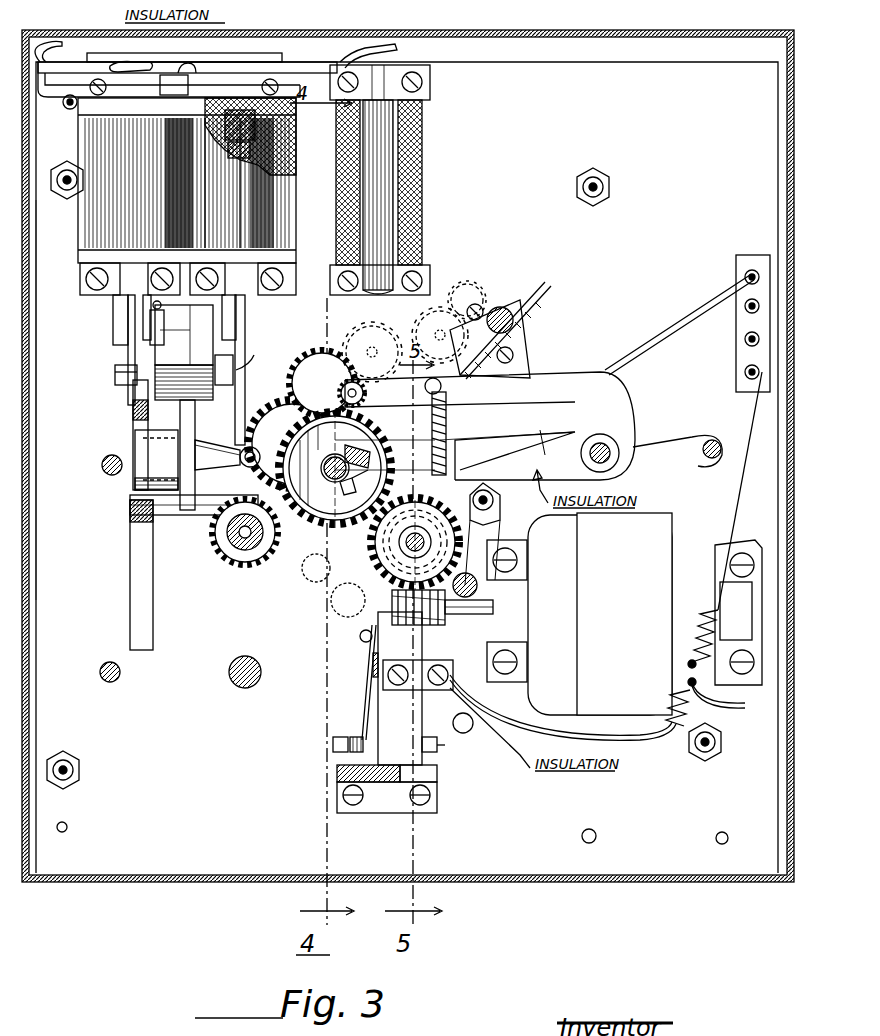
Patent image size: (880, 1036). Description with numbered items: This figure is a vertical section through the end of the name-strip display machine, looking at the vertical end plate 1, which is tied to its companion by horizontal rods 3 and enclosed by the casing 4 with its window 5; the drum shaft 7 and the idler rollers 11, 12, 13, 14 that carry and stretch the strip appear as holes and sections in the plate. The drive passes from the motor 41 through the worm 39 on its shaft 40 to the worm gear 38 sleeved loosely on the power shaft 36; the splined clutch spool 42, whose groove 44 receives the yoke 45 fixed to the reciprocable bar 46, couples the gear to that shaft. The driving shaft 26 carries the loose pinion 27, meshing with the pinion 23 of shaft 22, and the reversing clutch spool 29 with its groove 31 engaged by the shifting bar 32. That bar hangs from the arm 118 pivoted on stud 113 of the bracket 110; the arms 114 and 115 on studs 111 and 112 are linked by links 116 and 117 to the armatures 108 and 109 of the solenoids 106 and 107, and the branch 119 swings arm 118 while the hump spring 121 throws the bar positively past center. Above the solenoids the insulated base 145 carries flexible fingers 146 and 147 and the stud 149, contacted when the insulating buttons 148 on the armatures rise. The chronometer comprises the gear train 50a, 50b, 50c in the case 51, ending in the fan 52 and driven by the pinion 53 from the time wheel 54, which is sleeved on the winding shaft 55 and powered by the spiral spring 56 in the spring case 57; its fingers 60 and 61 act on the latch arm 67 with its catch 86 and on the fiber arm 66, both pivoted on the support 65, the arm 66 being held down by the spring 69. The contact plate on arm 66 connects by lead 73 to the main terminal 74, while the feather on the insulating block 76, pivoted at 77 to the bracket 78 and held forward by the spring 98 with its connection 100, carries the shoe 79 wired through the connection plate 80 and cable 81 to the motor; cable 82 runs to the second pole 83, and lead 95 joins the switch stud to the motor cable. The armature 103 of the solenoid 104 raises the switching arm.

The end plate 1 is at (407, 467).
The horizontal rods 3 is at (67, 185).
The casing 4 is at (700, 38).
The window 5 is at (37, 372).
The shaft 7 is at (253, 684).
The idler roller 11 is at (72, 110).
The idler roller 12 is at (77, 828).
The idler roller 13 is at (582, 836).
The idler roller 14 is at (716, 838).
The shaft 22 is at (341, 433).
The pinion 23 is at (290, 415).
The driving shaft 26 is at (230, 565).
The pinion 27 is at (298, 569).
The clutch spool 29 is at (255, 562).
The exterior groove 31 is at (232, 548).
The shifting bar 32 is at (210, 514).
The power shaft 36 is at (412, 550).
The worm gear 38 is at (408, 540).
The worm 39 is at (430, 625).
The motor shaft 40 is at (493, 608).
The motor 41 is at (600, 614).
The clutch spool 42 is at (348, 600).
The groove 44 is at (316, 568).
The yoke 45 is at (500, 515).
The reciprocable bar 46 is at (495, 502).
The gear train 50a is at (372, 352).
The gear train 50b is at (440, 333).
The gear train 50c is at (470, 290).
The case 51 is at (508, 305).
The vane or fan 52 is at (552, 285).
The pinion 53 is at (322, 383).
The time wheel 54 is at (283, 384).
The winding shaft 55 is at (352, 494).
The spiral spring 56 is at (345, 452).
The spring case 57 is at (335, 470).
The radial projection or finger 60 is at (322, 528).
The lateral projection or finger 61 is at (370, 486).
The support 65 is at (605, 462).
The arm 66 is at (572, 470).
The arm 67 is at (578, 386).
The spring 69 is at (660, 452).
The lead 73 is at (670, 342).
The main terminal 74 is at (745, 277).
The insulating block 76 is at (378, 640).
The pivot 77 is at (455, 735).
The bracket 78 is at (337, 775).
The metallic shoe 79 is at (385, 436).
The connection plate 80 is at (418, 686).
The cable 81 is at (636, 740).
The cable 82 is at (738, 500).
The second pole 83 is at (745, 374).
The depending catch 86 is at (507, 438).
The lead 95 is at (737, 702).
The spring 98 is at (366, 688).
The connection 100 is at (373, 660).
The armature 103 is at (420, 150).
The solenoid 104 is at (420, 192).
The solenoid 106 is at (100, 222).
The solenoid 107 is at (265, 220).
The armature 108 is at (118, 310).
The armature 109 is at (240, 310).
The bracket 110 is at (194, 352).
The stud 111 is at (116, 372).
The stud 112 is at (255, 358).
The stud 113 is at (150, 322).
The arm 114 is at (133, 410).
The arm 115 is at (236, 418).
The link 116 is at (128, 352).
The link 117 is at (245, 340).
The arm 118 is at (192, 416).
The depending branch 119 is at (163, 459).
The hump spring 121 is at (132, 547).
The insulated base 145 is at (60, 70).
The flexible contact finger 146 is at (100, 66).
The flexible contact finger 147 is at (245, 78).
The insulating button 148 is at (290, 118).
The metallic stud 149 is at (190, 70).